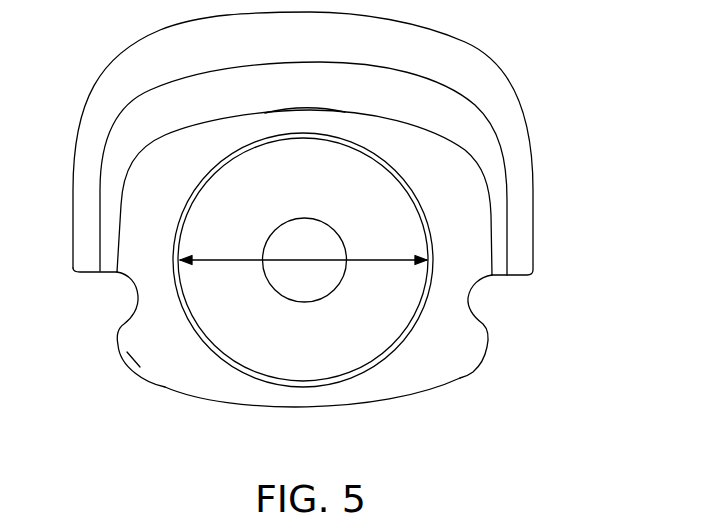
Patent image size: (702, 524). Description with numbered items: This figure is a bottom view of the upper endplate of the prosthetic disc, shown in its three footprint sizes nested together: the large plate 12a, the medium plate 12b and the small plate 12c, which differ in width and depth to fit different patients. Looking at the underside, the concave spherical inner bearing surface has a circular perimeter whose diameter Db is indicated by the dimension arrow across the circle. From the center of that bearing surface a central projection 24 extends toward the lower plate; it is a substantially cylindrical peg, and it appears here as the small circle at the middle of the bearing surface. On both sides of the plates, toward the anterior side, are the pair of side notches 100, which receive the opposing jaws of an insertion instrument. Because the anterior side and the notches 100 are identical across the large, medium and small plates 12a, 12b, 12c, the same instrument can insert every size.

The large upper plate 12a is at (510, 84).
The medium upper plate 12b is at (500, 148).
The small upper plate 12c is at (493, 207).
The central projection 24 is at (305, 248).
The side notches 100 is at (137, 298).
The diameter of the inner bearing surface Db is at (368, 265).